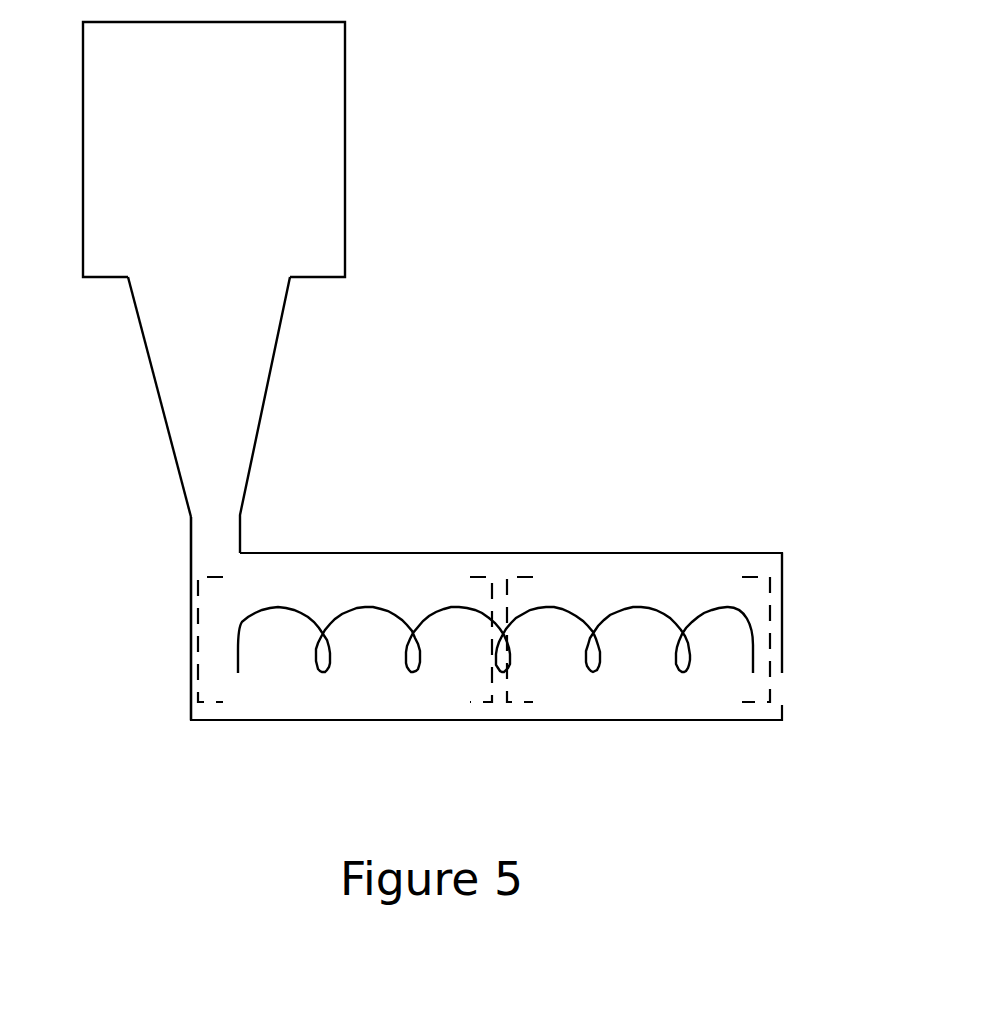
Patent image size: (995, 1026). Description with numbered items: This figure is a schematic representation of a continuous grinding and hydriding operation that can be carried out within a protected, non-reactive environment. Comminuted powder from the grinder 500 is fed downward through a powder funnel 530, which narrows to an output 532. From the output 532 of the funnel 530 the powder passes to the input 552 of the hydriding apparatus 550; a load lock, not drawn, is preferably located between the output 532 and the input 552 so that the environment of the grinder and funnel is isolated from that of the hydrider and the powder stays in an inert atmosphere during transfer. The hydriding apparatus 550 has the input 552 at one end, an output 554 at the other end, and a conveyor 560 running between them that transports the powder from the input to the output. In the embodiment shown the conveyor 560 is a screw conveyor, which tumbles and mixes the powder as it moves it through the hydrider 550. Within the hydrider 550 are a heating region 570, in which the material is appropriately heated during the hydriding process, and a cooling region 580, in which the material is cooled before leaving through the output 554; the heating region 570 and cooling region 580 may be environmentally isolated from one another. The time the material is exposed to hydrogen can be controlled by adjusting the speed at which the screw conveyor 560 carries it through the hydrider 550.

The grinder 500 is at (393, 180).
The powder funnel 530 is at (147, 420).
The output of the funnel 532 is at (225, 519).
The input of the hydrider 552 is at (194, 556).
The hydriding apparatus 550 is at (514, 738).
The output of the hydrider 554 is at (802, 684).
The screw conveyor 560 is at (402, 668).
The heating region 570 is at (374, 583).
The cooling region 580 is at (644, 580).